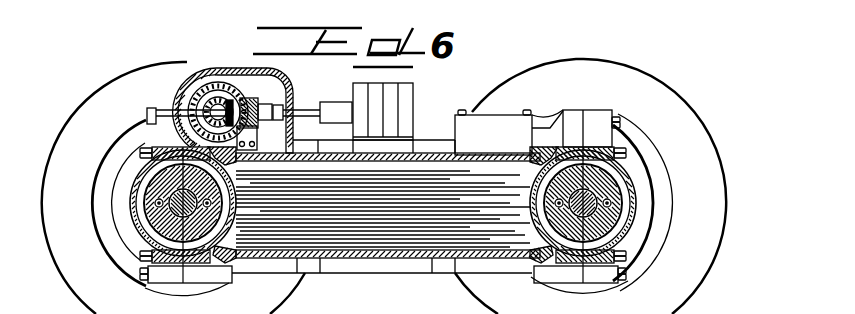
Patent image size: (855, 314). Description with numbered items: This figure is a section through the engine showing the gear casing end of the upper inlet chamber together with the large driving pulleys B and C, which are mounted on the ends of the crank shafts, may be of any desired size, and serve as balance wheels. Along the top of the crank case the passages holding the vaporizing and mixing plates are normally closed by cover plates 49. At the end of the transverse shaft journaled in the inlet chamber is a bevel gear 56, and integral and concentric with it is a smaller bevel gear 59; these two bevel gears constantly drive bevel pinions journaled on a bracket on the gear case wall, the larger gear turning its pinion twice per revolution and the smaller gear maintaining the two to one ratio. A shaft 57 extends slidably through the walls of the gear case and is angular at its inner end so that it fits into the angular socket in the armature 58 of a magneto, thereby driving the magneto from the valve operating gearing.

The cover plates 49 is at (491, 120).
The bevel gear 56 is at (203, 83).
The shaft 57 is at (157, 110).
The armature 58 is at (333, 116).
The smaller bevel gear 59 is at (216, 103).
The driving pulley B is at (690, 147).
The driving pulley C is at (82, 270).